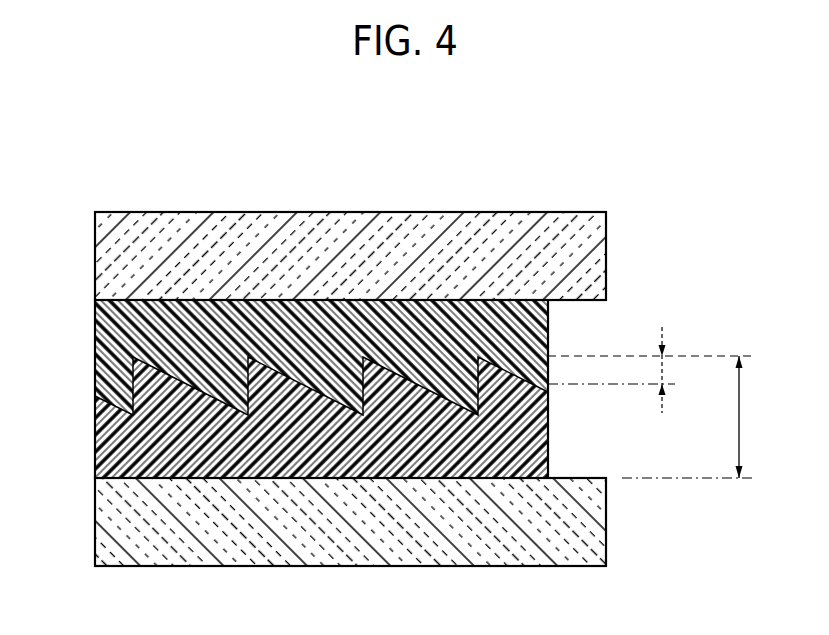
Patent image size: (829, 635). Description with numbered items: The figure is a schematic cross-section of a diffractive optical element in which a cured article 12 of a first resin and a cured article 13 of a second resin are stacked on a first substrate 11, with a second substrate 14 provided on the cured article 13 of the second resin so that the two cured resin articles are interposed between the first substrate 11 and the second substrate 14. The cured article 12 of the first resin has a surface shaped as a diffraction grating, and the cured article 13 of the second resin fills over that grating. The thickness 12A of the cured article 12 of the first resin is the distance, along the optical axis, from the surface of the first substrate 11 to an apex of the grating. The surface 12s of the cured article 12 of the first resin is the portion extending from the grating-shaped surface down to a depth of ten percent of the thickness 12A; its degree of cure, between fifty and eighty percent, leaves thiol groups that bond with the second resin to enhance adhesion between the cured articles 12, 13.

The first substrate 11 is at (137, 537).
The cured article of the first resin 12 is at (137, 446).
The cured article of the second resin 13 is at (137, 338).
The second substrate 14 is at (137, 275).
The surface of the cured article of the first resin 12s is at (650, 370).
The thickness of the cured article of the first resin 12A is at (702, 417).